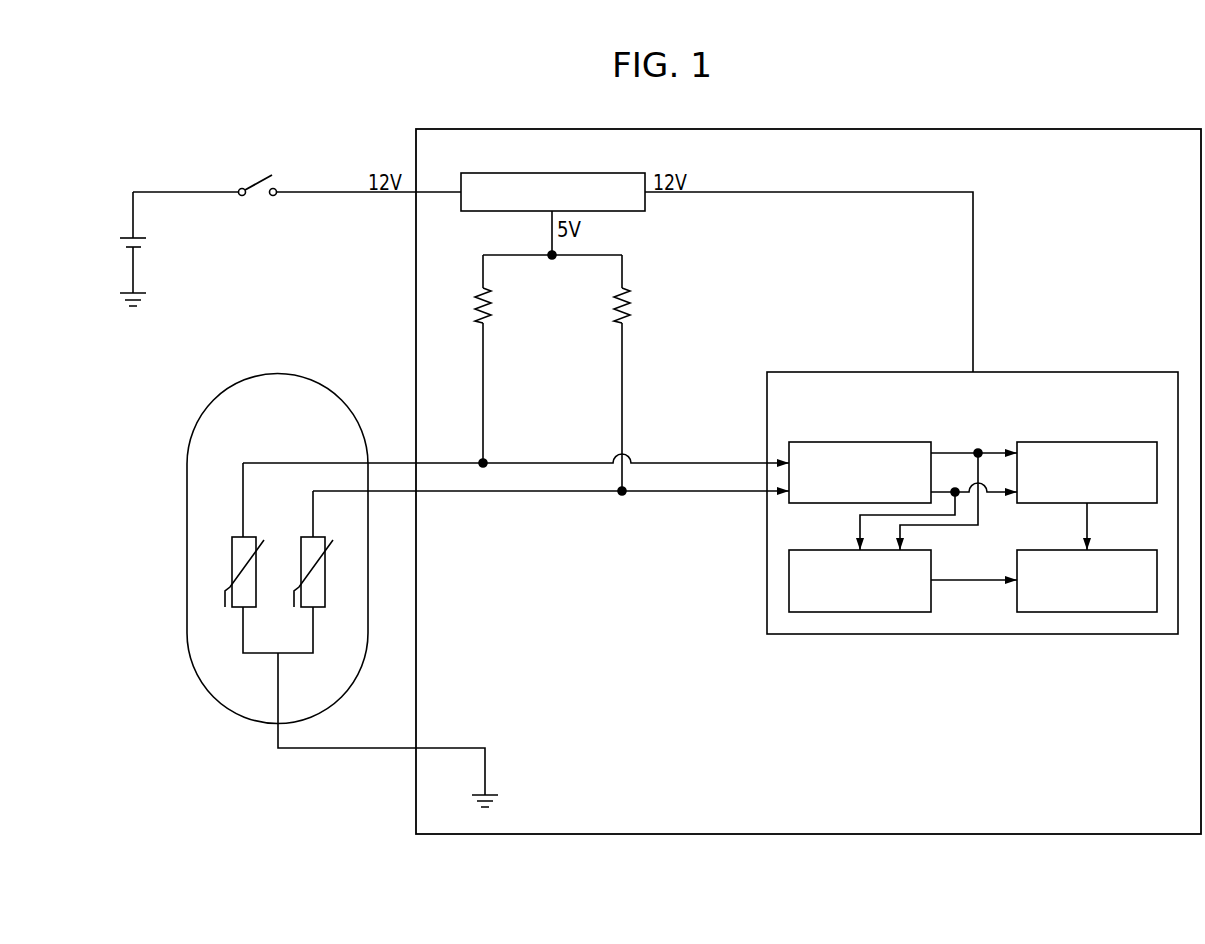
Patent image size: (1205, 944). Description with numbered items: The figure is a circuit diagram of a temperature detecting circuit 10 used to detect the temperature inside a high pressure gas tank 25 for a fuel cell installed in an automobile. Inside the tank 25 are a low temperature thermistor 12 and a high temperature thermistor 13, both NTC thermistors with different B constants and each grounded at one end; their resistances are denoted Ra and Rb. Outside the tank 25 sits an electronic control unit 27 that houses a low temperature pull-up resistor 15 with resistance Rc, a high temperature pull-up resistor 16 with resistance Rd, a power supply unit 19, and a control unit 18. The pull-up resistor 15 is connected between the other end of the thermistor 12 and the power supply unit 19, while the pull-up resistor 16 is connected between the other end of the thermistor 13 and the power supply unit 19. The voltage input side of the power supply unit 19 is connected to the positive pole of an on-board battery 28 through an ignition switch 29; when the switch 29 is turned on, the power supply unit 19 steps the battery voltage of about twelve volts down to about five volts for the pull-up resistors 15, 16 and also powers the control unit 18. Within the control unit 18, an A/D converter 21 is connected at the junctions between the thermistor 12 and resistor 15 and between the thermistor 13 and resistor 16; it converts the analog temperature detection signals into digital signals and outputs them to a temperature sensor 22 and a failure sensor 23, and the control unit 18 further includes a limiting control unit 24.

The temperature detecting circuit 10 is at (356, 300).
The low temperature thermistor 12 is at (232, 548).
The high temperature thermistor 13 is at (325, 592).
The low temperature pull-up resistor 15 is at (480, 291).
The high temperature pull-up resistor 16 is at (625, 291).
The control unit 18 is at (1118, 372).
The power supply unit 19 is at (553, 173).
The A/D converter 21 is at (856, 442).
The temperature sensor 22 is at (1088, 442).
The failure sensor 23 is at (931, 565).
The limiting control unit 24 is at (1121, 550).
The high pressure gas tank 25 is at (312, 378).
The electronic control unit (ECU) 27 is at (808, 129).
The on-board battery 28 is at (138, 238).
The ignition switch (IGSW) 29 is at (258, 182).